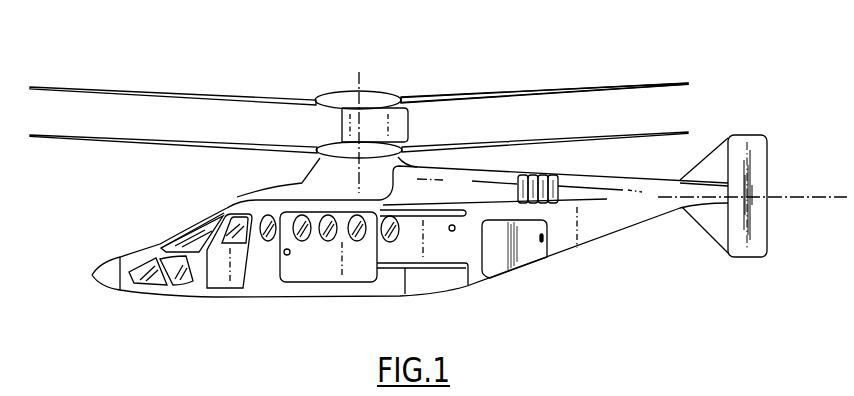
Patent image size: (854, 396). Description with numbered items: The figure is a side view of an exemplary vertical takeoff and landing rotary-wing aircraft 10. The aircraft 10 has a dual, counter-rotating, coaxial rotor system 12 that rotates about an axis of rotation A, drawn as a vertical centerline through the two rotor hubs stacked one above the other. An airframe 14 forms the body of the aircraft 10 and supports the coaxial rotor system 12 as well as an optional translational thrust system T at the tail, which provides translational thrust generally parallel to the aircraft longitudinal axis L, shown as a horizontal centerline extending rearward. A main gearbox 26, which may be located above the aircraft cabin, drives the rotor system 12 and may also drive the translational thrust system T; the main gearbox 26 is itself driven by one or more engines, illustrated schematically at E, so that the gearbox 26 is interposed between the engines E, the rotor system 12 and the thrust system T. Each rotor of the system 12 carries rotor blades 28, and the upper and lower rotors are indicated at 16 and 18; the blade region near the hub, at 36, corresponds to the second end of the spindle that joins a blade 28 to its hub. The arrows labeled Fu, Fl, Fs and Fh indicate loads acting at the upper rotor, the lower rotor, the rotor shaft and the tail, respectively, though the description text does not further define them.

The rotary-wing aircraft 10 is at (465, 57).
The coaxial rotor system 12 is at (390, 87).
The airframe 14 is at (252, 198).
The upper rotor blade 16 is at (407, 91).
The lower rotor 18 is at (310, 163).
The main gearbox 26 is at (347, 189).
The rotor blade 28 is at (328, 268).
The second end of spindle 36 is at (306, 111).
The axis of rotation A is at (362, 80).
The engine E is at (467, 197).
The aircraft longitudinal axis L is at (793, 198).
The translational thrust system T is at (758, 120).
The upper rotor force Fu is at (330, 90).
The lower rotor force Fl is at (326, 141).
The side force Fs is at (406, 122).
The horizontal force Fh is at (516, 122).